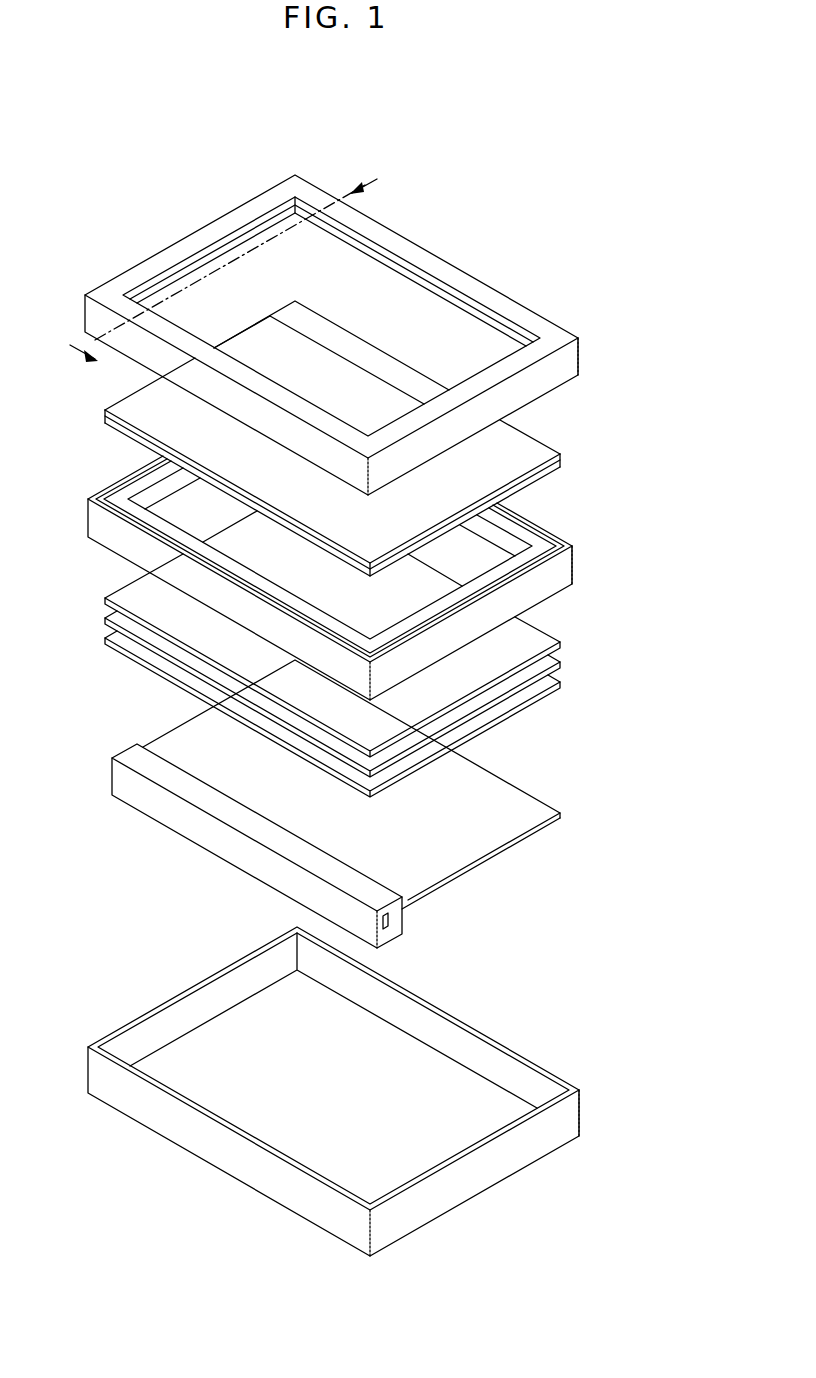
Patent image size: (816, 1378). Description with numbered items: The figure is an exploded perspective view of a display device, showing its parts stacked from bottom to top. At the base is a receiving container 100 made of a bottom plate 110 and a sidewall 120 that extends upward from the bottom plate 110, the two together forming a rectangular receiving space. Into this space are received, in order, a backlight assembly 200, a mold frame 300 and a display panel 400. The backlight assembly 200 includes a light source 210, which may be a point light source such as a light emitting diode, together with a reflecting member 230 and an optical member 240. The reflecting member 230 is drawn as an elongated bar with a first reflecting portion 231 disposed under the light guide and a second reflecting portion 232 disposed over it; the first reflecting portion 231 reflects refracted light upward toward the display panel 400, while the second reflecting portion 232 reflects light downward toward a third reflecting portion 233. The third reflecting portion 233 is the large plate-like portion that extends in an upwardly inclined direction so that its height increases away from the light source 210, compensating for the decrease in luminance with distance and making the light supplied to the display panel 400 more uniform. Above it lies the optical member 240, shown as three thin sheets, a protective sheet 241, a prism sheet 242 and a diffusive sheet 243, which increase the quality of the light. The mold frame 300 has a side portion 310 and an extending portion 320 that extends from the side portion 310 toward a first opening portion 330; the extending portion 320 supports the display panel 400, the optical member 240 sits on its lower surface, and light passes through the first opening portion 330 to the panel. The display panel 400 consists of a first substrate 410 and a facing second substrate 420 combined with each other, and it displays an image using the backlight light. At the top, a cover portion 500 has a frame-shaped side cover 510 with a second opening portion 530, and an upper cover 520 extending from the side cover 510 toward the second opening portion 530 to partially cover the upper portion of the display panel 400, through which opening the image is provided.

The receiving container 100 is at (390, 1091).
The bottom plate 110 is at (496, 1112).
The sidewall 120 is at (488, 1166).
The backlight assembly 200 is at (420, 749).
The light source 210 is at (535, 902).
The reflecting member 230 is at (401, 804).
The first reflecting portion 231 is at (390, 921).
The second reflecting portion 232 is at (400, 907).
The third reflecting portion 233 is at (497, 844).
The optical member 240 is at (398, 654).
The protective sheet 241 is at (565, 641).
The prism sheet 242 is at (565, 663).
The diffusive sheet 243 is at (565, 684).
The mold frame 300 is at (392, 578).
The side portion 310 is at (539, 527).
The extending portion 320 is at (541, 553).
The first opening portion 330 is at (496, 565).
The display panel 400 is at (400, 438).
The first substrate 410 is at (538, 461).
The second substrate 420 is at (503, 463).
The cover portion 500 is at (383, 335).
The side cover 510 is at (577, 358).
The upper cover 520 is at (476, 291).
The second opening portion 530 is at (481, 333).